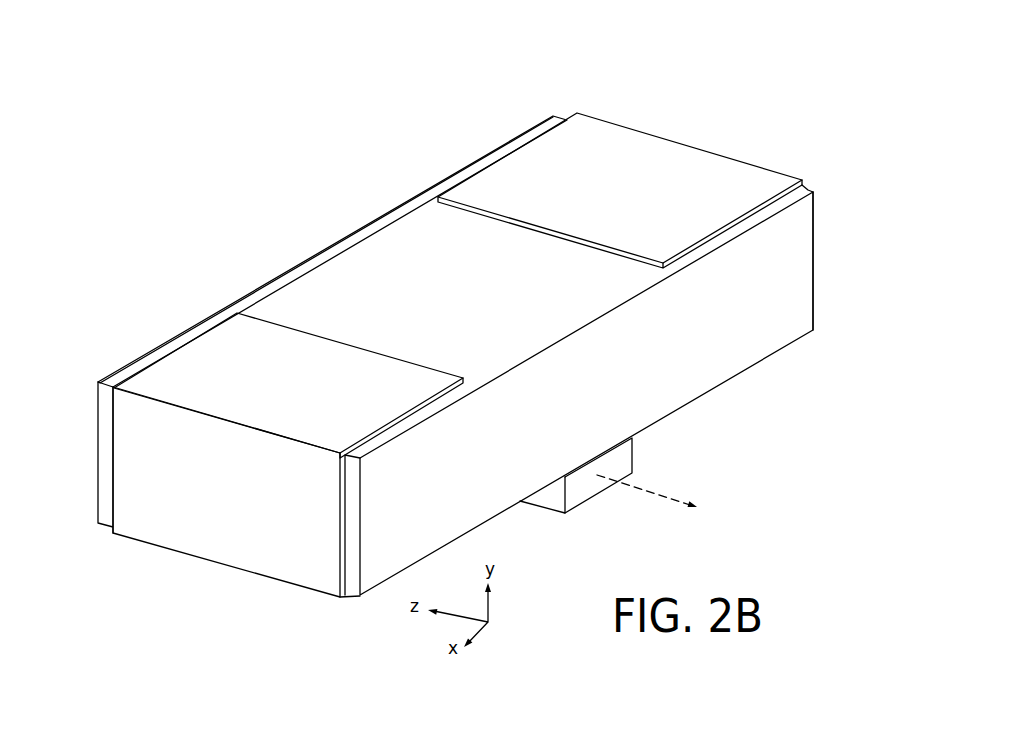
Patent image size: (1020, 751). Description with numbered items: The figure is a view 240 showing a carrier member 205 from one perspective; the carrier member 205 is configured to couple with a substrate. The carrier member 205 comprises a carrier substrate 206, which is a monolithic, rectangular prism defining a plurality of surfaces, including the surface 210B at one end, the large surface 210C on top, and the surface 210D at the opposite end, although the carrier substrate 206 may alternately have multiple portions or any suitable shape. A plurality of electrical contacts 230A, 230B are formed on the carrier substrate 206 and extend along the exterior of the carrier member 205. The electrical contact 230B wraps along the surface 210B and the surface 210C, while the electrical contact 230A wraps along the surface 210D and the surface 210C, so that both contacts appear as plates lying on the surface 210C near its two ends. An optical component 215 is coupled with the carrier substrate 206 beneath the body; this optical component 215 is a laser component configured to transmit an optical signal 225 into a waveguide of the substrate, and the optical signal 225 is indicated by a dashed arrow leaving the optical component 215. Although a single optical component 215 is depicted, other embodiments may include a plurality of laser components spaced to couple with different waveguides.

The carrier member 205 is at (722, 414).
The carrier substrate 206 is at (802, 227).
The surface 210B is at (108, 472).
The surface 210C is at (470, 319).
The surface 210D is at (665, 114).
The optical component 215 is at (557, 505).
The optical signal 225 is at (653, 492).
The electrical contact 230A is at (634, 190).
The electrical contact 230B is at (297, 387).
The view 240 is at (270, 189).